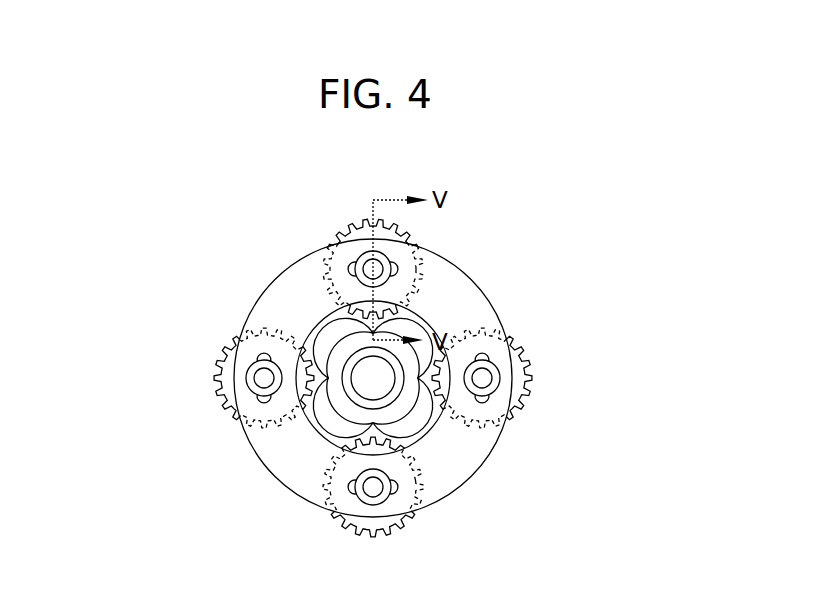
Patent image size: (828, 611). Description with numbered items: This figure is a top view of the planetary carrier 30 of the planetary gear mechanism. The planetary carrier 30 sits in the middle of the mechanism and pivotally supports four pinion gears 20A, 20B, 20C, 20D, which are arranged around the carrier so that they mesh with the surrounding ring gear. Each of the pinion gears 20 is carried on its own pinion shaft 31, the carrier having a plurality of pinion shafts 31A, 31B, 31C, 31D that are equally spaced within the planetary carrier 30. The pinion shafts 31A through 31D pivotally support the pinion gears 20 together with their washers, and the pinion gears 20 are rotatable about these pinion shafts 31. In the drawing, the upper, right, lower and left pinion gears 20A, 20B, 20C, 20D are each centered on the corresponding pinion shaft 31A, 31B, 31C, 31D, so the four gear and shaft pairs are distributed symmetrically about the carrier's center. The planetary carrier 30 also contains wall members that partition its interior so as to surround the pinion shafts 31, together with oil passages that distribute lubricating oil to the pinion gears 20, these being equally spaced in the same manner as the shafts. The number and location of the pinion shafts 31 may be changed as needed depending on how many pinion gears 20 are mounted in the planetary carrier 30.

The pinion gear 20 is at (373, 374).
The pinion gear 20A is at (356, 218).
The pinion gear 20B is at (522, 377).
The pinion gear 20C is at (368, 535).
The pinion gear 20D is at (215, 378).
The planetary carrier 30 is at (458, 301).
The pinion shaft 31 is at (374, 379).
The pinion shaft 31A is at (360, 258).
The pinion shaft 31B is at (489, 396).
The pinion shaft 31C is at (390, 497).
The pinion shaft 31D is at (253, 363).